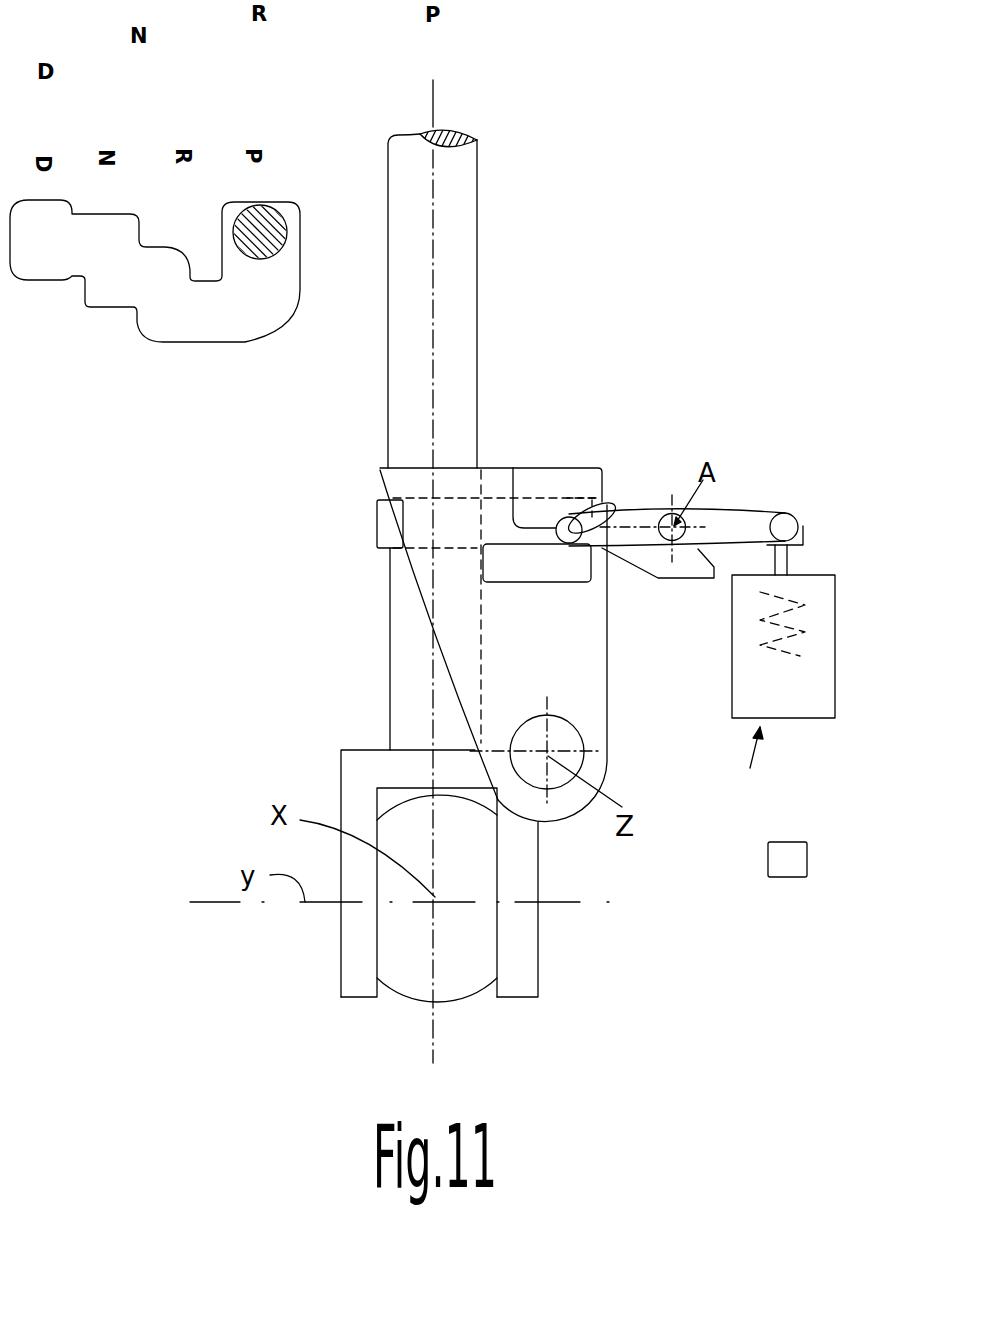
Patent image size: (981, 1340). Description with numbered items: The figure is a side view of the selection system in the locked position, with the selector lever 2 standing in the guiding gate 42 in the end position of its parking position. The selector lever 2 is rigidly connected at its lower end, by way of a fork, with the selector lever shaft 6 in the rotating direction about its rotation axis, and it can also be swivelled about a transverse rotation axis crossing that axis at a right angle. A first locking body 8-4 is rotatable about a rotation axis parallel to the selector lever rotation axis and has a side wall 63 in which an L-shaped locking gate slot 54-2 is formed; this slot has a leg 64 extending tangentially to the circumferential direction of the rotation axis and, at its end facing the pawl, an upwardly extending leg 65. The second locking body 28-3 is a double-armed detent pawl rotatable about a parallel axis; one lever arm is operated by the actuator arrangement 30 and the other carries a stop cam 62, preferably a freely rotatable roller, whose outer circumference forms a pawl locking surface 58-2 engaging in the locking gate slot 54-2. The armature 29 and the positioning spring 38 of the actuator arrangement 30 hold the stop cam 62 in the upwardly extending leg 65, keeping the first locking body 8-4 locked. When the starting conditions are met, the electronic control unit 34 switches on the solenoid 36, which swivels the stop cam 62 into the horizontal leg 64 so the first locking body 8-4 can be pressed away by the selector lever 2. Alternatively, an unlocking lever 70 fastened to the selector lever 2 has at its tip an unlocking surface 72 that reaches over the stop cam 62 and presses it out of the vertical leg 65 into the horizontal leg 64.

The selector lever 2 is at (272, 234).
The guiding gate 42 is at (50, 278).
The first locking body 8-4 is at (548, 468).
The upwardly extending leg 65 is at (512, 480).
The side wall 63 is at (408, 493).
The unlocking lever 70 is at (385, 524).
The locking gate slot 54-2 is at (570, 575).
The leg 64 is at (555, 573).
The stop cam 62 is at (605, 496).
The pawl locking surface 58-2 is at (620, 507).
The second locking body 28-3 is at (708, 517).
The unlocking surface 72 is at (683, 579).
The armature 29 is at (782, 566).
The solenoid 36 is at (817, 710).
The positioning spring 38 is at (798, 635).
The actuator arrangement 30 is at (752, 769).
The electronic control unit 34 is at (780, 877).
The selector lever shaft 6 is at (467, 983).